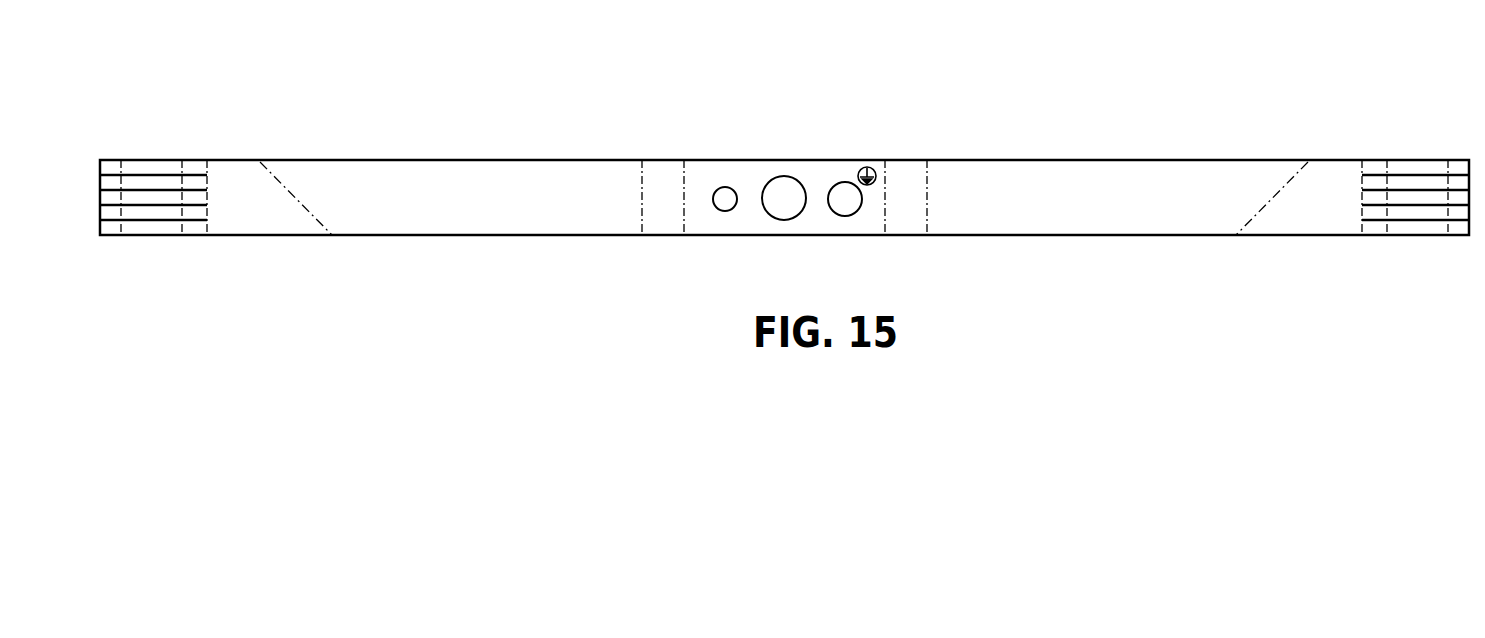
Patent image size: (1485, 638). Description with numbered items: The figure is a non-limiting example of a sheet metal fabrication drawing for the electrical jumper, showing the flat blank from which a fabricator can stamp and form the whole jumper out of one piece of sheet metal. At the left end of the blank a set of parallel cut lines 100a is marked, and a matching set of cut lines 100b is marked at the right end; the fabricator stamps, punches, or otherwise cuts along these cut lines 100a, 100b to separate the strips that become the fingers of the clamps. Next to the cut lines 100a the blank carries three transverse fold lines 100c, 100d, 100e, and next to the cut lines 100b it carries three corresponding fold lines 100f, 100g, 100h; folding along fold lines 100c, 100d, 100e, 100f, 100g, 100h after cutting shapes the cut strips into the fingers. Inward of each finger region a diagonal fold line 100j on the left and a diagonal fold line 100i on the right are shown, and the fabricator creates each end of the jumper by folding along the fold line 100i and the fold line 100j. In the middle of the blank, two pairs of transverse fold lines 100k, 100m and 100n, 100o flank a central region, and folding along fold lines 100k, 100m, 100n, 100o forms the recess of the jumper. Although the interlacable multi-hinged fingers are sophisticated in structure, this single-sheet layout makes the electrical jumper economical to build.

The cut lines 100a is at (130, 175).
The cut lines 100b is at (1443, 175).
The fold line 100c is at (207, 185).
The fold line 100d is at (183, 168).
The fold line 100e is at (122, 168).
The fold line 100f is at (1445, 168).
The fold line 100g is at (1385, 168).
The fold line 100h is at (1362, 186).
The fold line 100i is at (1257, 213).
The fold line 100j is at (325, 224).
The fold line 100k is at (642, 216).
The fold line 100m is at (684, 216).
The fold line 100n is at (885, 216).
The fold line 100o is at (927, 216).